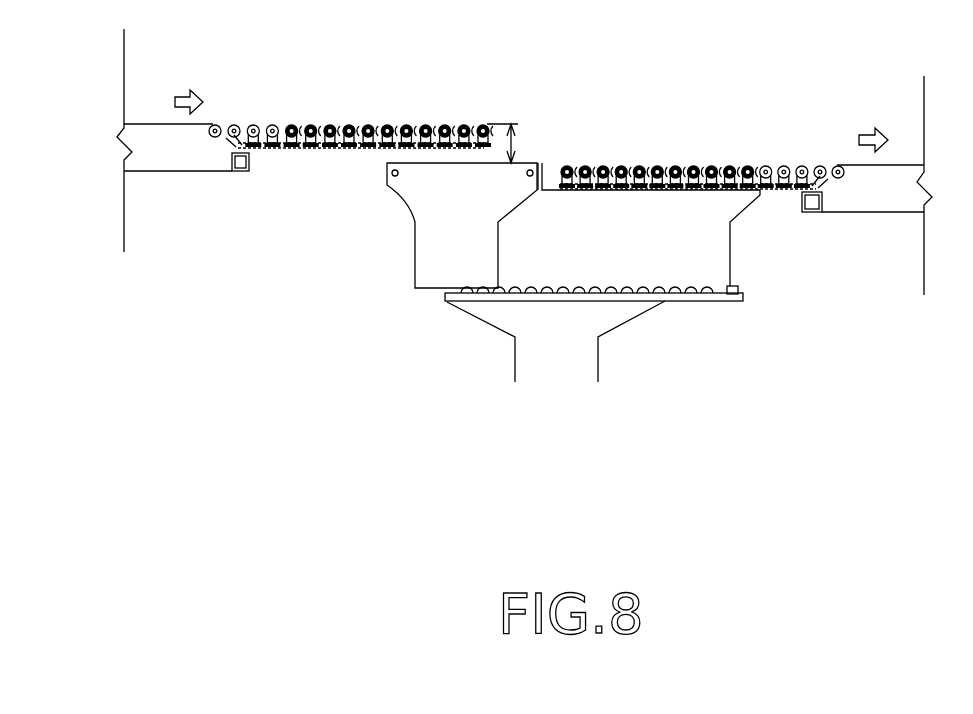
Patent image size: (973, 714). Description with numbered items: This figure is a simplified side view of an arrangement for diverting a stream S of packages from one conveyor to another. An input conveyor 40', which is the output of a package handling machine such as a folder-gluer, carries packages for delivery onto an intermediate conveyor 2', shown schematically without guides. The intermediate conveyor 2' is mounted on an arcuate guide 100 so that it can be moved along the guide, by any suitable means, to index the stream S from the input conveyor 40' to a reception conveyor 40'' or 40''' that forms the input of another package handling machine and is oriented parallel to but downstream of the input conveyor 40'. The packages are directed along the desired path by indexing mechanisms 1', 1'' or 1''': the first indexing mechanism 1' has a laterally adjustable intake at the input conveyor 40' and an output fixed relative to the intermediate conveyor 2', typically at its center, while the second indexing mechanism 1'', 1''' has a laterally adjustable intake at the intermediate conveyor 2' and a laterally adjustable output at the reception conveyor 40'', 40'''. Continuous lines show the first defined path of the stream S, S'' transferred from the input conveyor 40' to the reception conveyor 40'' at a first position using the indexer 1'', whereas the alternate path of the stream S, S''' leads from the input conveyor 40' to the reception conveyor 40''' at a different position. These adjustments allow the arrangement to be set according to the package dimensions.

The first indexing mechanism 1' is at (351, 103).
The second indexing mechanism 1'' is at (732, 143).
The second indexing mechanism 1''' is at (732, 143).
The stream of packages S is at (270, 93).
The stream of packages S'' is at (832, 134).
The stream of packages S''' is at (832, 134).
The input conveyor 40' is at (174, 140).
The reception conveyor 40'' is at (877, 185).
The reception conveyor 40''' is at (877, 185).
The intermediate conveyor 2' is at (559, 228).
The arcuate guide 100 is at (443, 297).